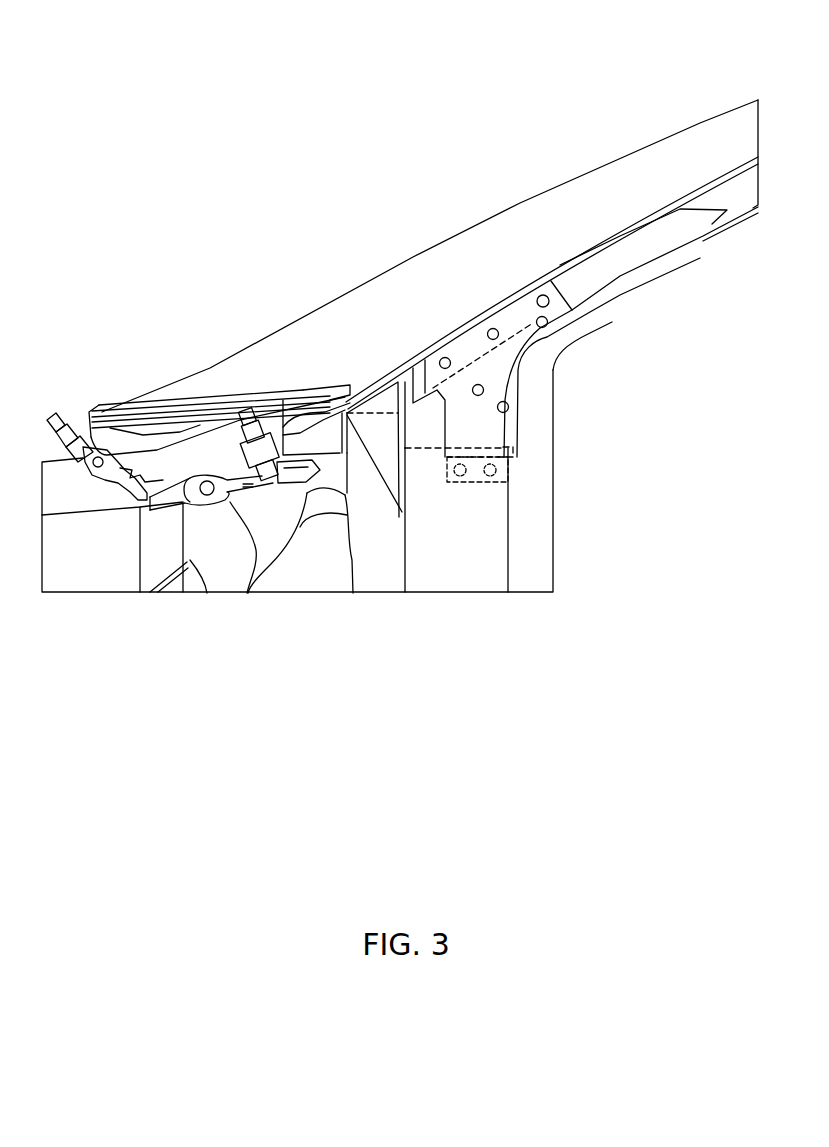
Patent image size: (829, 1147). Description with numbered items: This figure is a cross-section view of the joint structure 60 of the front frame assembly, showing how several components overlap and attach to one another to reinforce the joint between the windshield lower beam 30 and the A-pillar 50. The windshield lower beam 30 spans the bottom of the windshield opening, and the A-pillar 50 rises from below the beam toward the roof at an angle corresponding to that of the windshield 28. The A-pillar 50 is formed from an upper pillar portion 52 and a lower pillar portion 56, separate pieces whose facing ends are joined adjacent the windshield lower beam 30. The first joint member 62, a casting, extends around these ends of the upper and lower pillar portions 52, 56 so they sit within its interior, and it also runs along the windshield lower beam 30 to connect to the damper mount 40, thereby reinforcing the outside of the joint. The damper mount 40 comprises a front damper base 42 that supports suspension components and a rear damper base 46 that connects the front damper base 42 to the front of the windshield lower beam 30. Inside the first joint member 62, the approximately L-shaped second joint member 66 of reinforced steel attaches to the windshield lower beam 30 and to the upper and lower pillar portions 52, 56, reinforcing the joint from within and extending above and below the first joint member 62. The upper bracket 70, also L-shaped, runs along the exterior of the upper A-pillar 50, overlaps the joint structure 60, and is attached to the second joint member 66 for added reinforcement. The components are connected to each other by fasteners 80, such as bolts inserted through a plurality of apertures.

The windshield 28 is at (406, 317).
The windshield lower beam 30 is at (108, 440).
The damper mount 40 is at (220, 536).
The front damper base 42 is at (70, 490).
The rear damper base 46 is at (208, 440).
The A-pillar 50 is at (581, 343).
The upper pillar portion 52 is at (478, 318).
The lower pillar portion 56 is at (483, 533).
The joint structure 60 is at (527, 413).
The first joint member 62 is at (556, 375).
The second joint member 66 is at (633, 253).
The upper bracket 70 is at (725, 198).
The fasteners 80 is at (505, 324).